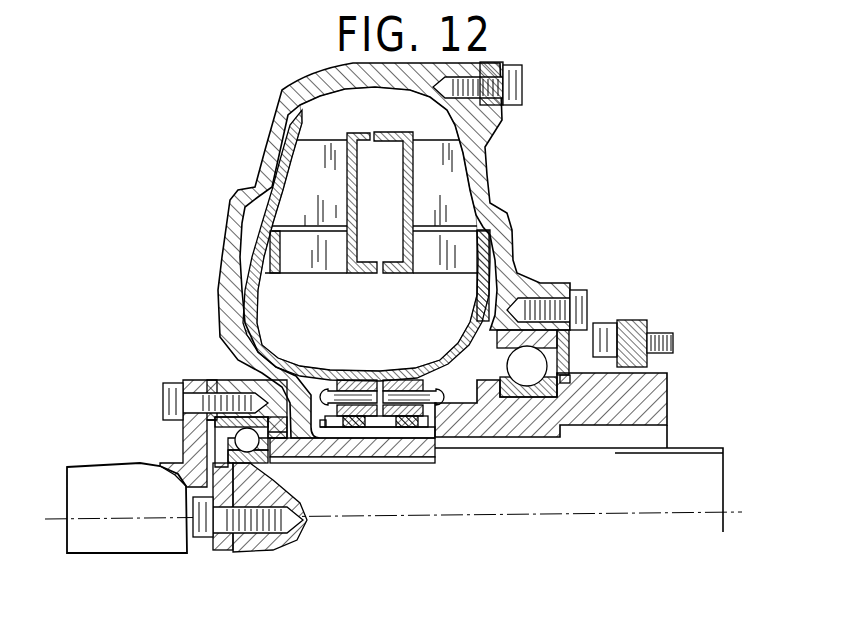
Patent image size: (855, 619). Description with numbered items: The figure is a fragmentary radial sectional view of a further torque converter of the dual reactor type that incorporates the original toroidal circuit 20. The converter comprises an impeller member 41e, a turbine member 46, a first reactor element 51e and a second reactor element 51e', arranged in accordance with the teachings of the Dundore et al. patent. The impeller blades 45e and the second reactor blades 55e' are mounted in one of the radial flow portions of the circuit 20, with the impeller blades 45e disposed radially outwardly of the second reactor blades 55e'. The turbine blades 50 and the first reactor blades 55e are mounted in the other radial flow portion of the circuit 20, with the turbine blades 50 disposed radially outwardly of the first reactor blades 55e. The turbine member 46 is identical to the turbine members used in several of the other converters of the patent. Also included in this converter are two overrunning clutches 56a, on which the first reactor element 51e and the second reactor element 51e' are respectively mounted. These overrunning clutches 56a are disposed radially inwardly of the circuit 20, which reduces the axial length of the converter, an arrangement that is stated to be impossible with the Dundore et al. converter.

The toroidal circuit 20 is at (392, 349).
The turbine member 46 is at (333, 141).
The impeller member 41e is at (429, 132).
The turbine blades 50 is at (329, 198).
The impeller blades 45e is at (452, 199).
The first reactor element 51e is at (306, 271).
The first reactor blades 55e is at (352, 223).
The second reactor element 51e' is at (437, 273).
The second reactor blades 55e' is at (463, 276).
The overrunning clutches 56a is at (400, 420).